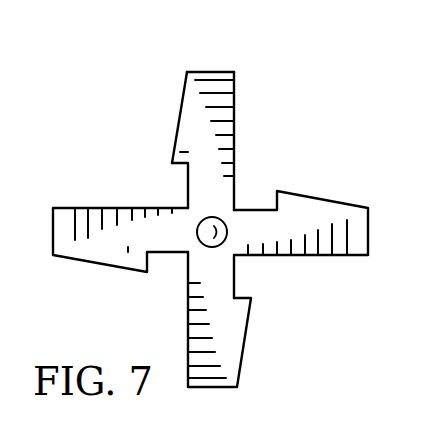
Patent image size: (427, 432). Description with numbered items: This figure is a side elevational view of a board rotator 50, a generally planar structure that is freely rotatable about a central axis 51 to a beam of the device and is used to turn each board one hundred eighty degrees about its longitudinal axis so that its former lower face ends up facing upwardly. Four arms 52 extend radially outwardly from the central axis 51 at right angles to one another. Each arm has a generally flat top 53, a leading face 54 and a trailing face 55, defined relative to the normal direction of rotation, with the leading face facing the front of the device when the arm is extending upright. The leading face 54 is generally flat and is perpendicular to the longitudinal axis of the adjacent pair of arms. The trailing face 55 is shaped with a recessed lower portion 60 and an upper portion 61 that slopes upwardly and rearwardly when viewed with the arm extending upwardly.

The board rotator 50 is at (118, 256).
The central axis 51 is at (211, 228).
The arm 52 is at (325, 243).
The flat top 53 is at (210, 72).
The leading face 54 is at (236, 111).
The trailing face 55 is at (178, 110).
The recessed lower portion 60 is at (187, 183).
The upper portion 61 is at (185, 82).